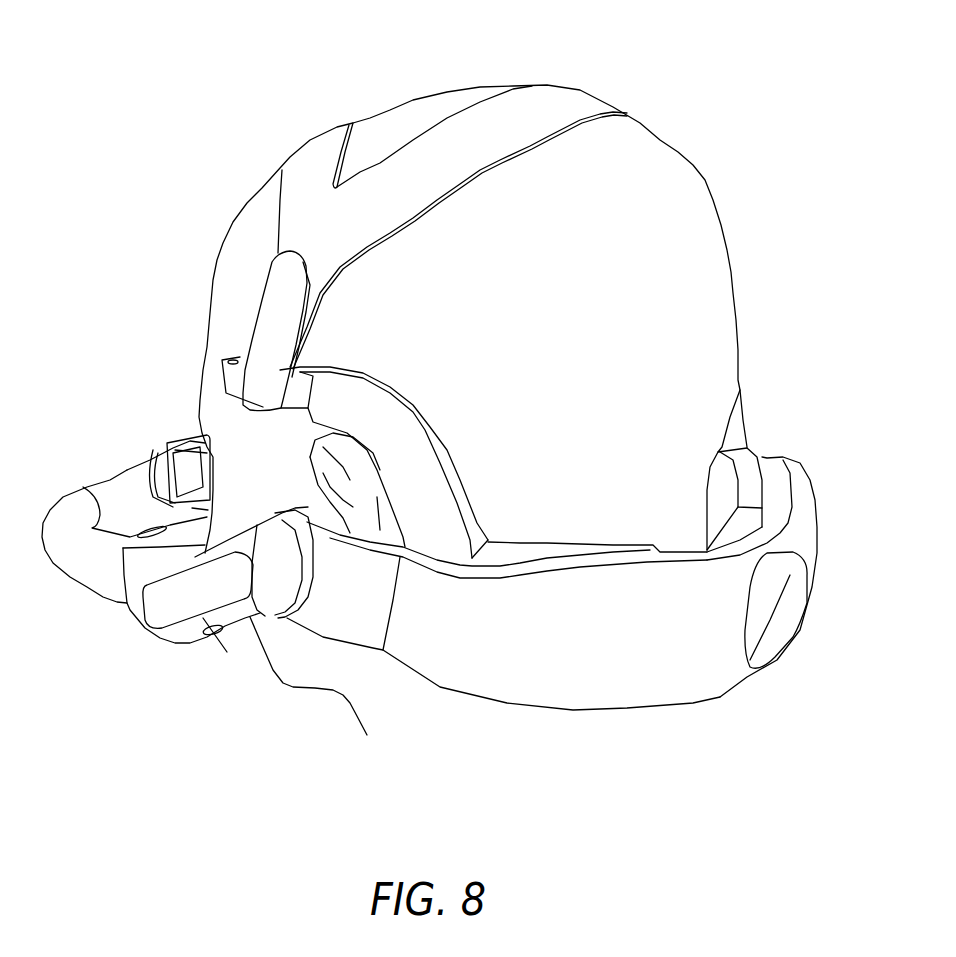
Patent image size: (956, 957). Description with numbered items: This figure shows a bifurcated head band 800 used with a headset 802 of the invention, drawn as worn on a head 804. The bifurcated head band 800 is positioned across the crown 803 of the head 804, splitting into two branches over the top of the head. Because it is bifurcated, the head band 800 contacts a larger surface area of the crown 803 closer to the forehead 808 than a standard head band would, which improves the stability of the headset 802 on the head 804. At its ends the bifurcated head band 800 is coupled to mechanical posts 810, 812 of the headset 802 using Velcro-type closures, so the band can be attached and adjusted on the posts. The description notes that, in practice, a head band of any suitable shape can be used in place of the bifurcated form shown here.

The bifurcated head band 800 is at (343, 246).
The headset 802 is at (763, 683).
The crown 803 is at (487, 66).
The head 804 is at (695, 172).
The forehead 808 is at (217, 211).
The mechanical post 810 is at (430, 423).
The mechanical post 812 is at (756, 358).